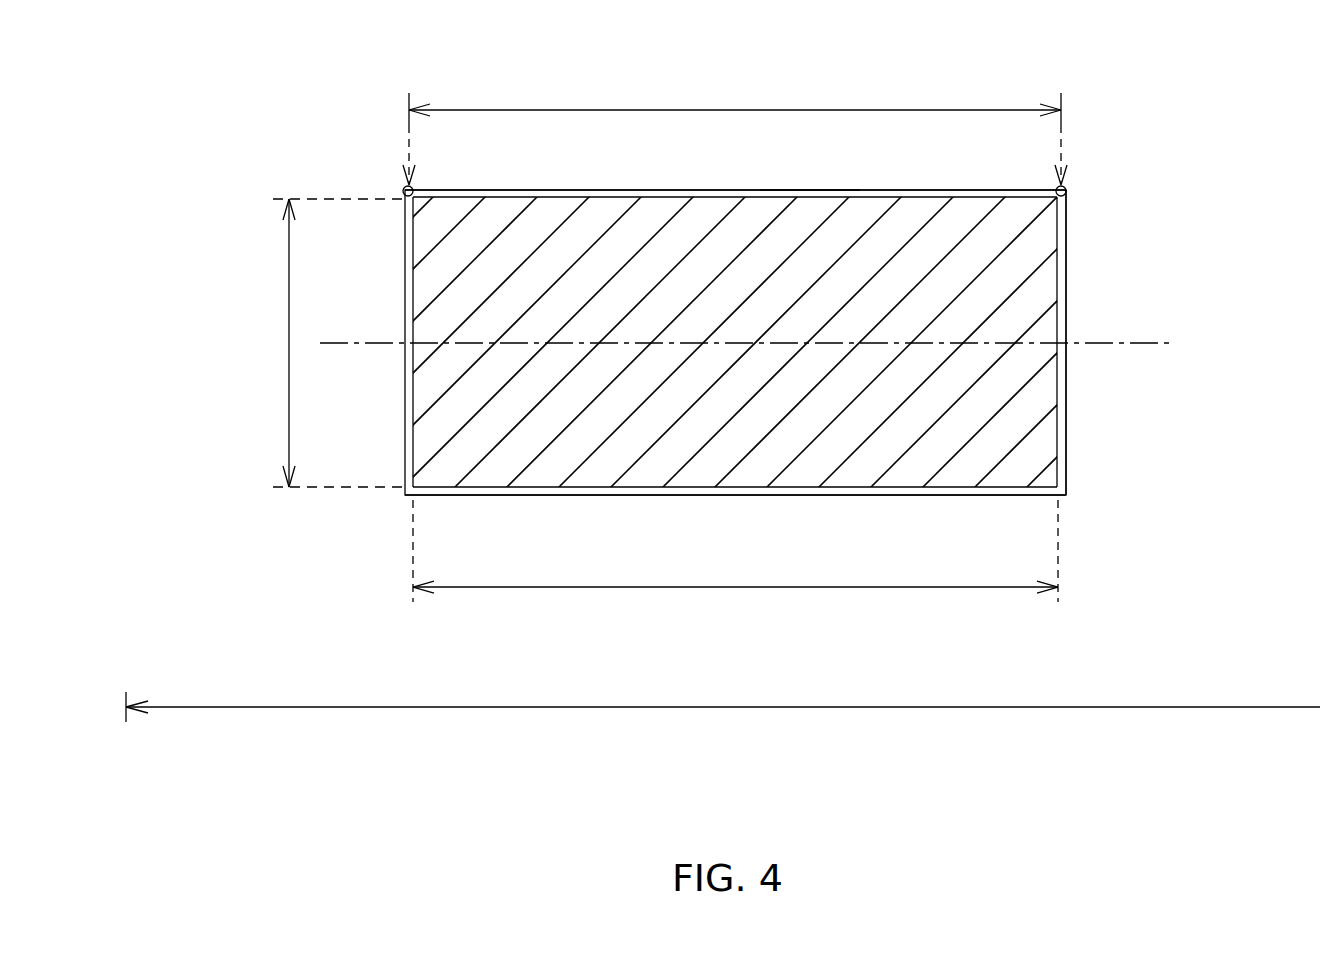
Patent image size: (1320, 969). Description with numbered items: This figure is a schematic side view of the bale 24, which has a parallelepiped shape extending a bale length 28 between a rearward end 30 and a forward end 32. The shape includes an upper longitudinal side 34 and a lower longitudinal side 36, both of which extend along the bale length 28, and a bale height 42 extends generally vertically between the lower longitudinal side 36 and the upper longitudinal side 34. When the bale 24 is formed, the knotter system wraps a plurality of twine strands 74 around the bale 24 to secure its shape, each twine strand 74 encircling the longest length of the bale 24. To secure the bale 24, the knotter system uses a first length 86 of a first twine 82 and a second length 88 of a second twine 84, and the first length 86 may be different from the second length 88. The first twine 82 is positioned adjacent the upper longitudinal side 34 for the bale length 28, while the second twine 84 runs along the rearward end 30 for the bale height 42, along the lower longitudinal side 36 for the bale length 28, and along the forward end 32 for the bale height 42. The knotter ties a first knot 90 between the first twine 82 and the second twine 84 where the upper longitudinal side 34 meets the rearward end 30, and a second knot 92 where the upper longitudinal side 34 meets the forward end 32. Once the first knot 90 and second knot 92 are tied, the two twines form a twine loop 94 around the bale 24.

The bale 24 is at (1060, 312).
The bale length 28 is at (713, 588).
The rearward end 30 is at (1057, 443).
The forward end 32 is at (413, 411).
The upper longitudinal side 34 is at (720, 198).
The lower longitudinal side 36 is at (648, 488).
The bale height 42 is at (289, 352).
The twine strand 74 is at (618, 190).
The first twine 82 is at (808, 193).
The second twine 84 is at (792, 495).
The first length 86 is at (740, 109).
The second length 88 is at (715, 708).
The first knot 90 is at (1066, 190).
The second knot 92 is at (403, 190).
The twine loop 94 is at (1072, 403).